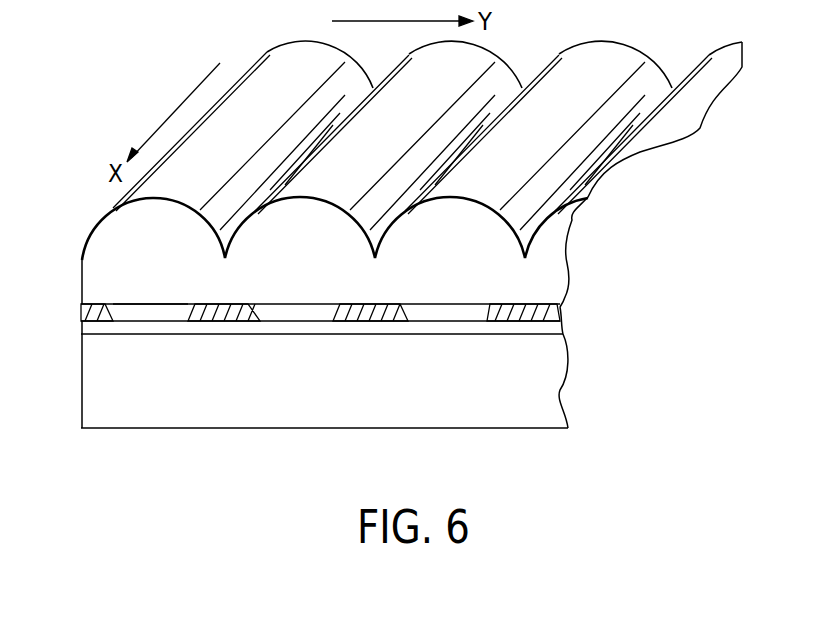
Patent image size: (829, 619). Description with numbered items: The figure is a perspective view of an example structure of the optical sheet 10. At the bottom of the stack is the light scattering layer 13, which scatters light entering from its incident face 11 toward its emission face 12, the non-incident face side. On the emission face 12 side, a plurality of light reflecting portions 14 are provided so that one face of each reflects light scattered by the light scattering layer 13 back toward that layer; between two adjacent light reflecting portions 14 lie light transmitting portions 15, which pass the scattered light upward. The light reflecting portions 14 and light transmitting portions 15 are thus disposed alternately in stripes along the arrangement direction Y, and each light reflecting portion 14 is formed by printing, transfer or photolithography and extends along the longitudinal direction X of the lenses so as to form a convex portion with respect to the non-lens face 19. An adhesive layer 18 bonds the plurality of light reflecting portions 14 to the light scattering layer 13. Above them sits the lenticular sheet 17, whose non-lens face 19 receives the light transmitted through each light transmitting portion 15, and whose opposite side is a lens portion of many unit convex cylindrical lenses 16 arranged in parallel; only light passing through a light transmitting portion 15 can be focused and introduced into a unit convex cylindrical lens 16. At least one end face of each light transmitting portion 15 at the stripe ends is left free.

The optical sheet 10 is at (692, 176).
The incident face 11 is at (420, 429).
The emission face 12 is at (453, 322).
The light scattering layer 13 is at (88, 390).
The light reflecting portion 14 is at (88, 309).
The light transmitting portion 15 is at (175, 303).
The unit convex cylindrical lens 16 is at (101, 232).
The lenticular sheet 17 is at (82, 268).
The adhesive layer 18 is at (88, 331).
The non-lens face 19 is at (130, 303).